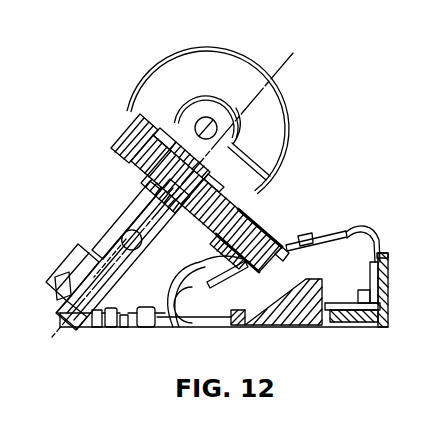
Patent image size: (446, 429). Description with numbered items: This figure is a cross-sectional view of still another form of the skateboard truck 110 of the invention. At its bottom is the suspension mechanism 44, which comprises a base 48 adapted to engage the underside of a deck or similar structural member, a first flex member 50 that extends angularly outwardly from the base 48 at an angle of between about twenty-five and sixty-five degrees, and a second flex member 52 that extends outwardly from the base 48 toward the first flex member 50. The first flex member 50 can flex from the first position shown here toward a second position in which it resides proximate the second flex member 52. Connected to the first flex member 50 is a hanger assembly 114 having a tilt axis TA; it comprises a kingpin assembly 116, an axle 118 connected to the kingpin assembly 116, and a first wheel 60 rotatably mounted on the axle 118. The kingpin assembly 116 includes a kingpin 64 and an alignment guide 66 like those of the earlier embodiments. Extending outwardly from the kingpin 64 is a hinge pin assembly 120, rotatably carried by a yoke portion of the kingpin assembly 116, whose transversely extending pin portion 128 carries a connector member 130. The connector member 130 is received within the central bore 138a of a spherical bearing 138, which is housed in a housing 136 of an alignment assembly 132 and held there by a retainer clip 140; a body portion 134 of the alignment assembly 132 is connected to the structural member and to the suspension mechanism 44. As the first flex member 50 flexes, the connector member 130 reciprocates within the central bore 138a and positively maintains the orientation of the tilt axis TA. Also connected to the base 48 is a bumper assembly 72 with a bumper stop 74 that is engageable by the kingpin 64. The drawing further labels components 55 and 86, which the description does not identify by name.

The suspension mechanism 44 is at (366, 214).
The base 48 is at (214, 329).
The first flex member 50 is at (198, 260).
The second flex member 52 is at (371, 235).
The threaded shaft 55 is at (140, 210).
The first wheel 60 is at (158, 76).
The kingpin 64 is at (122, 138).
The alignment guide 66 is at (262, 277).
The bumper assembly 72 is at (360, 340).
The bumper stop 74 is at (286, 316).
The lever 86 is at (306, 252).
The truck 110 is at (303, 133).
The hanger assembly 114 is at (252, 139).
The kingpin assembly 116 is at (94, 136).
The axle 118 is at (198, 120).
The hinge pin assembly 120 is at (95, 242).
The pin portion 128 is at (126, 233).
The connector member 130 is at (100, 257).
The alignment assembly 132 is at (53, 342).
The body portion 134 is at (95, 328).
The housing 136 is at (72, 257).
The spherical bearing 138 is at (70, 265).
The central bore 138a is at (88, 327).
The retainer clip 140 is at (137, 327).
The tilt axis TA is at (281, 62).